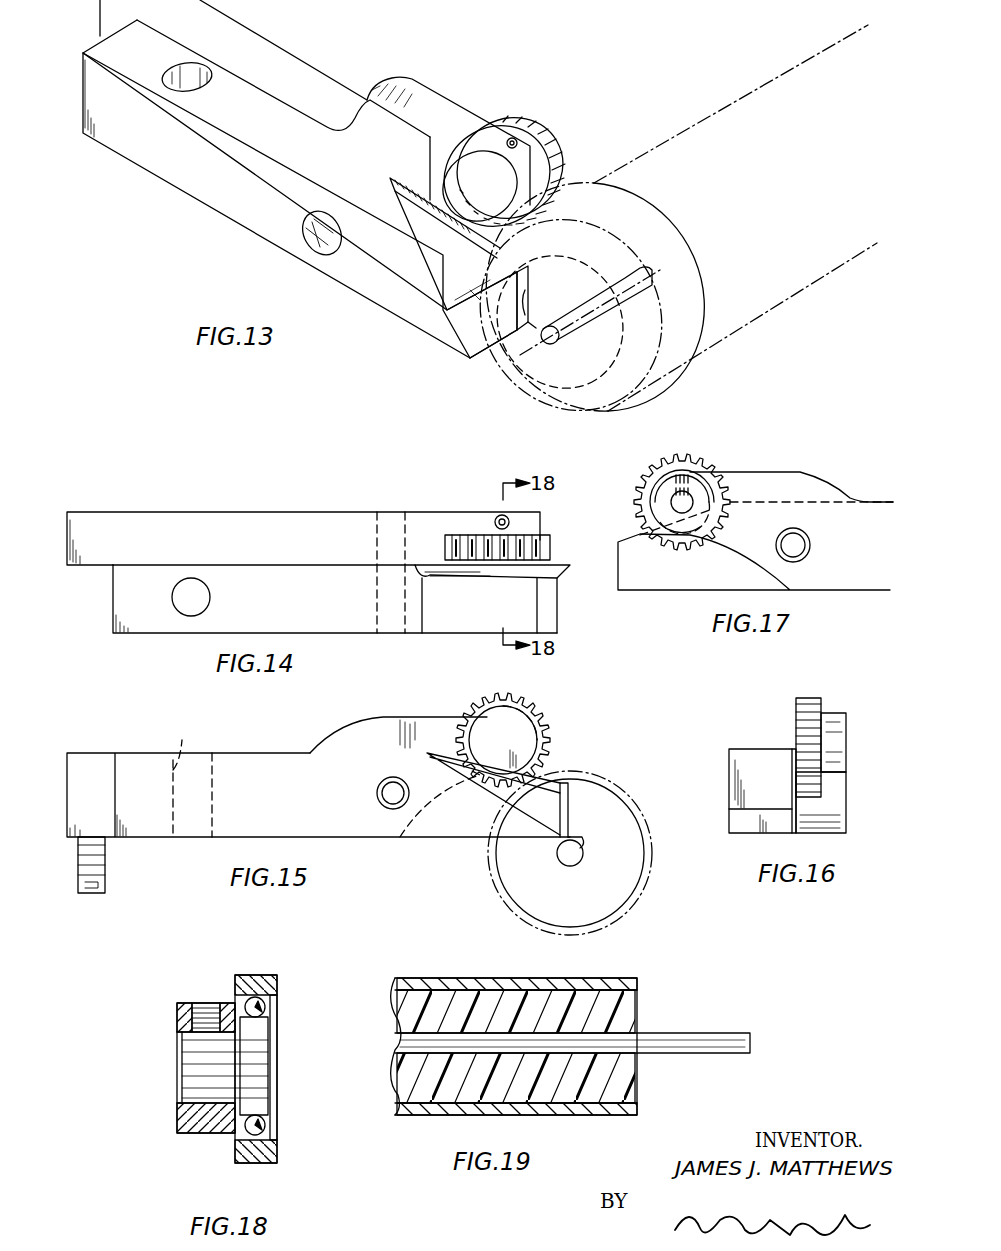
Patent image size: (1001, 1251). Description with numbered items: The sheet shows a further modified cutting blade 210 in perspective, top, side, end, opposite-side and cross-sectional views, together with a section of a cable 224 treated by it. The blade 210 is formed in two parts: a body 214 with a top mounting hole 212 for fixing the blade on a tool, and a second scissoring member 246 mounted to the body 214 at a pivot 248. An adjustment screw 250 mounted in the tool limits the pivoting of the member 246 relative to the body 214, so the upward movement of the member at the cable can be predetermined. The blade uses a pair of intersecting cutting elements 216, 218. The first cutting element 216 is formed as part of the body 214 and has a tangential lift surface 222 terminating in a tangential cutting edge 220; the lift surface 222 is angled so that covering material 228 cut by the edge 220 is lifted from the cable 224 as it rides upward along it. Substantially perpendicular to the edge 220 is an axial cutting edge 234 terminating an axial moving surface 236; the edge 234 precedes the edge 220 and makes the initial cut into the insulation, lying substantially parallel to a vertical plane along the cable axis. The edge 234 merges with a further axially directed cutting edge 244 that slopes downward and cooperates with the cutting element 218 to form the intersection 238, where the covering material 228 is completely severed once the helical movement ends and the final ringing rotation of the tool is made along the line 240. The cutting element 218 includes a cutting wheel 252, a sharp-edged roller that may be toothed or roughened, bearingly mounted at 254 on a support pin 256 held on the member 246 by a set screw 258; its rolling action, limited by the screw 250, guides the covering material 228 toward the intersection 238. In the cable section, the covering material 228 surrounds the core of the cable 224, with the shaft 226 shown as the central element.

In FIG. 13, the cutting blade embodiment 210 is at (412, 68).
In FIG. 14, the cutting blade embodiment 210 is at (108, 618).
In FIG. 15, the cutting blade embodiment 210 is at (88, 746).
In FIG. 13, the top mounting hole 212 is at (175, 65).
In FIG. 14, the top mounting hole 212 is at (176, 614).
In FIG. 15, the top mounting hole 212 is at (180, 776).
In FIG. 13, the body 214 is at (205, 192).
In FIG. 14, the body 214 is at (143, 633).
In FIG. 15, the body 214 is at (318, 795).
In FIG. 16, the body 214 is at (750, 745).
In FIG. 13, the first cutting element 216 is at (482, 360).
In FIG. 14, the first cutting element 216 is at (560, 614).
In FIG. 13, the second cutting element 218 is at (488, 128).
In FIG. 14, the second cutting element 218 is at (540, 514).
In FIG. 17, the second cutting element 218 is at (690, 450).
In FIG. 18, the second cutting element 218 is at (218, 1135).
In FIG. 13, the tangential cutting edge 220 is at (470, 365).
In FIG. 14, the tangential cutting edge 220 is at (560, 632).
In FIG. 15, the tangential cutting edge 220 is at (599, 848).
In FIG. 16, the tangential cutting edge 220 is at (745, 834).
In FIG. 13, the tangential lift surface 222 is at (445, 340).
In FIG. 14, the tangential lift surface 222 is at (540, 615).
In FIG. 13, the cable 224 is at (726, 135).
In FIG. 15, the cable 224 is at (626, 790).
In FIG. 19, the cable 224 is at (471, 966).
In FIG. 13, the shaft 226 is at (560, 345).
In FIG. 15, the shaft 226 is at (567, 866).
In FIG. 19, the shaft 226 is at (704, 1030).
In FIG. 13, the covering material 228 is at (572, 405).
In FIG. 15, the covering material 228 is at (640, 893).
In FIG. 19, the covering material 228 is at (612, 1118).
In FIG. 13, the axial cutting edge 234 is at (535, 330).
In FIG. 14, the axial cutting edge 234 is at (560, 565).
In FIG. 15, the axial cutting edge 234 is at (570, 810).
In FIG. 16, the axial cutting edge 234 is at (806, 825).
In FIG. 13, the axial moving surface 236 is at (533, 297).
In FIG. 14, the axial moving surface 236 is at (562, 575).
In FIG. 13, the intersection 238 is at (486, 250).
In FIG. 17, the intersection 238 is at (630, 535).
In FIG. 15, the intersection 238 is at (545, 770).
In FIG. 13, the line 240 is at (690, 240).
In FIG. 13, the further axially directed cutting edge 244 is at (476, 212).
In FIG. 14, the further axially directed cutting edge 244 is at (620, 545).
In FIG. 15, the further axially directed cutting edge 244 is at (503, 740).
In FIG. 13, the second scissoring member 246 is at (300, 78).
In FIG. 14, the second scissoring member 246 is at (163, 518).
In FIG. 17, the second scissoring member 246 is at (820, 490).
In FIG. 15, the second scissoring member 246 is at (355, 728).
In FIG. 16, the second scissoring member 246 is at (848, 730).
In FIG. 13, the pivot 248 is at (318, 252).
In FIG. 14, the pivot 248 is at (379, 500).
In FIG. 17, the pivot 248 is at (812, 550).
In FIG. 15, the pivot 248 is at (393, 793).
In FIG. 15, the adjustment screw 250 is at (105, 880).
In FIG. 13, the cutting wheel 252 is at (548, 165).
In FIG. 14, the cutting wheel 252 is at (480, 540).
In FIG. 15, the cutting wheel 252 is at (532, 712).
In FIG. 16, the cutting wheel 252 is at (824, 668).
In FIG. 18, the cutting wheel 252 is at (258, 975).
In FIG. 18, the bearing mounting 254 is at (268, 1005).
In FIG. 17, the support pin 256 is at (690, 495).
In FIG. 18, the support pin 256 is at (254, 1060).
In FIG. 13, the set screw 258 is at (517, 140).
In FIG. 14, the set screw 258 is at (495, 510).
In FIG. 18, the set screw 258 is at (202, 1002).